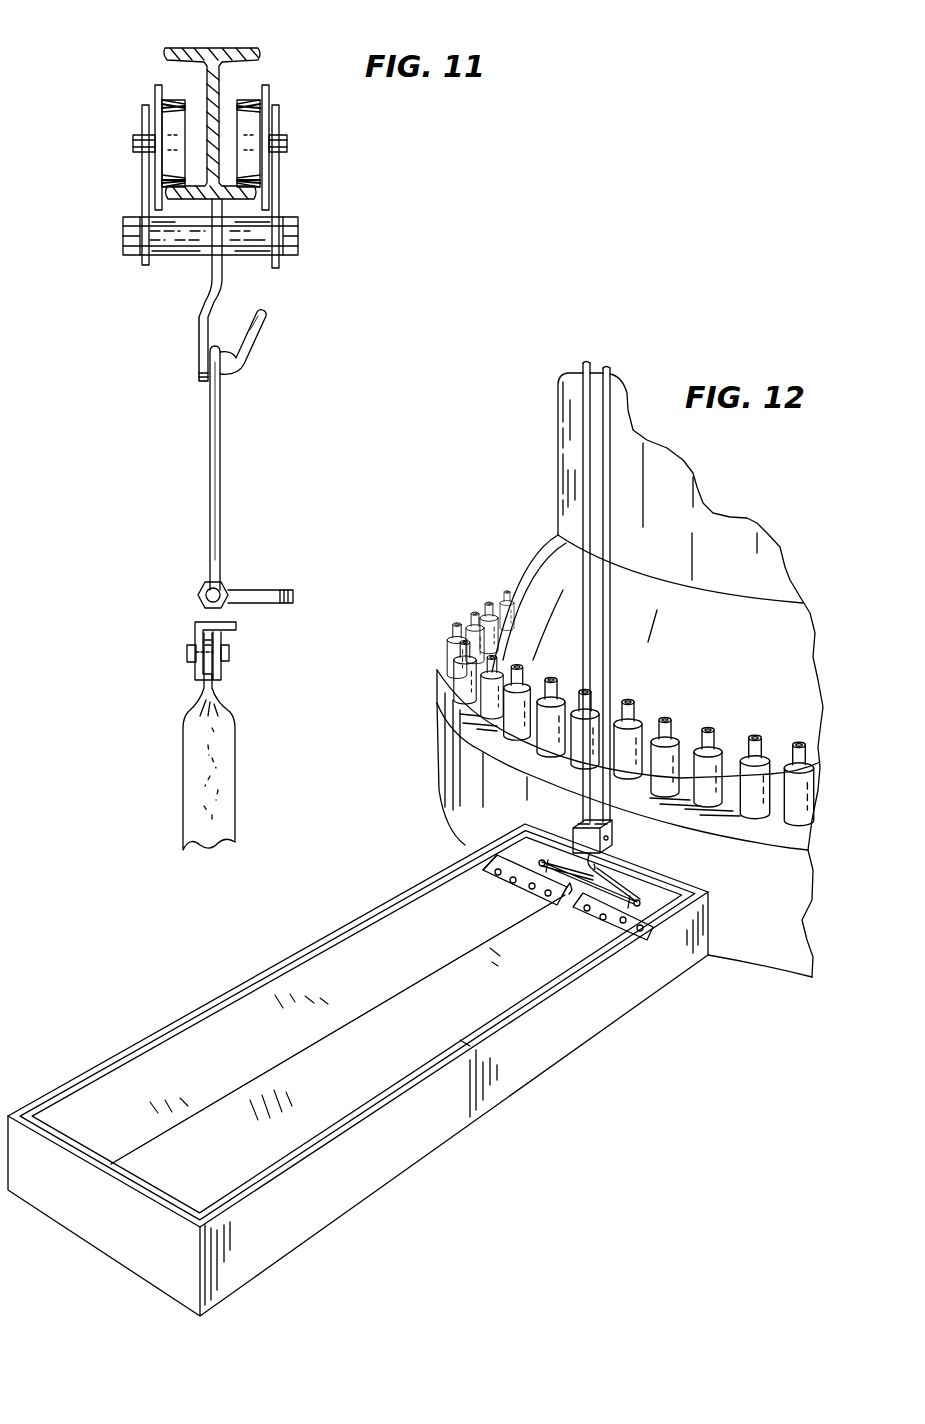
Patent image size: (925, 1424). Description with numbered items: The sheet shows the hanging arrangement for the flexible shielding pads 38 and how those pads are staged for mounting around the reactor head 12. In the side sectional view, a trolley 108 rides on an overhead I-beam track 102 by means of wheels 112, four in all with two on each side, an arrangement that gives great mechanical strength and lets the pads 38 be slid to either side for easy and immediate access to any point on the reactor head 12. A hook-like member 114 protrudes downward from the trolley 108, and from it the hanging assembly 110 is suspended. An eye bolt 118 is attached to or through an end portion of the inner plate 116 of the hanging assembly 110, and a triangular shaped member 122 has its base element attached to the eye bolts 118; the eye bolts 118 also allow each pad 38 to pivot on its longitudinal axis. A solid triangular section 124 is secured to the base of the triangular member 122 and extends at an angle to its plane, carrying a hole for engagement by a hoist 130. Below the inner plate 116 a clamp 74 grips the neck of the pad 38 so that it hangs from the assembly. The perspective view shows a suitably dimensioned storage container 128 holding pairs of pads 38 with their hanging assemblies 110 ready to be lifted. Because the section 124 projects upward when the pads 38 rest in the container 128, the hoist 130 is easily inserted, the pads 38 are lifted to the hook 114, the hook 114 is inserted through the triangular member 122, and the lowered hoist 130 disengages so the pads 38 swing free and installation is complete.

In FIG. 12, the reactor head 12 is at (559, 483).
In FIG. 11, the pads 38 is at (228, 745).
In FIG. 12, the pads 38 is at (396, 966).
In FIG. 11, the clamp 74 is at (222, 670).
In FIG. 11, the overhead I-beam track 102 is at (230, 46).
In FIG. 11, the trolley 108 is at (283, 122).
In FIG. 11, the hanging assembly 110 is at (236, 426).
In FIG. 12, the hanging assembly 110 is at (624, 880).
In FIG. 11, the wheels 112 is at (176, 100).
In FIG. 11, the hook-like member 114 is at (263, 310).
In FIG. 11, the inner plate 116 is at (195, 629).
In FIG. 11, the eye bolt 118 is at (199, 592).
In FIG. 11, the triangular shaped member 122 is at (210, 502).
In FIG. 11, the solid triangular section 124 is at (260, 590).
In FIG. 12, the solid triangular section 124 is at (575, 900).
In FIG. 12, the storage container 128 is at (557, 1040).
In FIG. 12, the hoist 130 is at (576, 830).